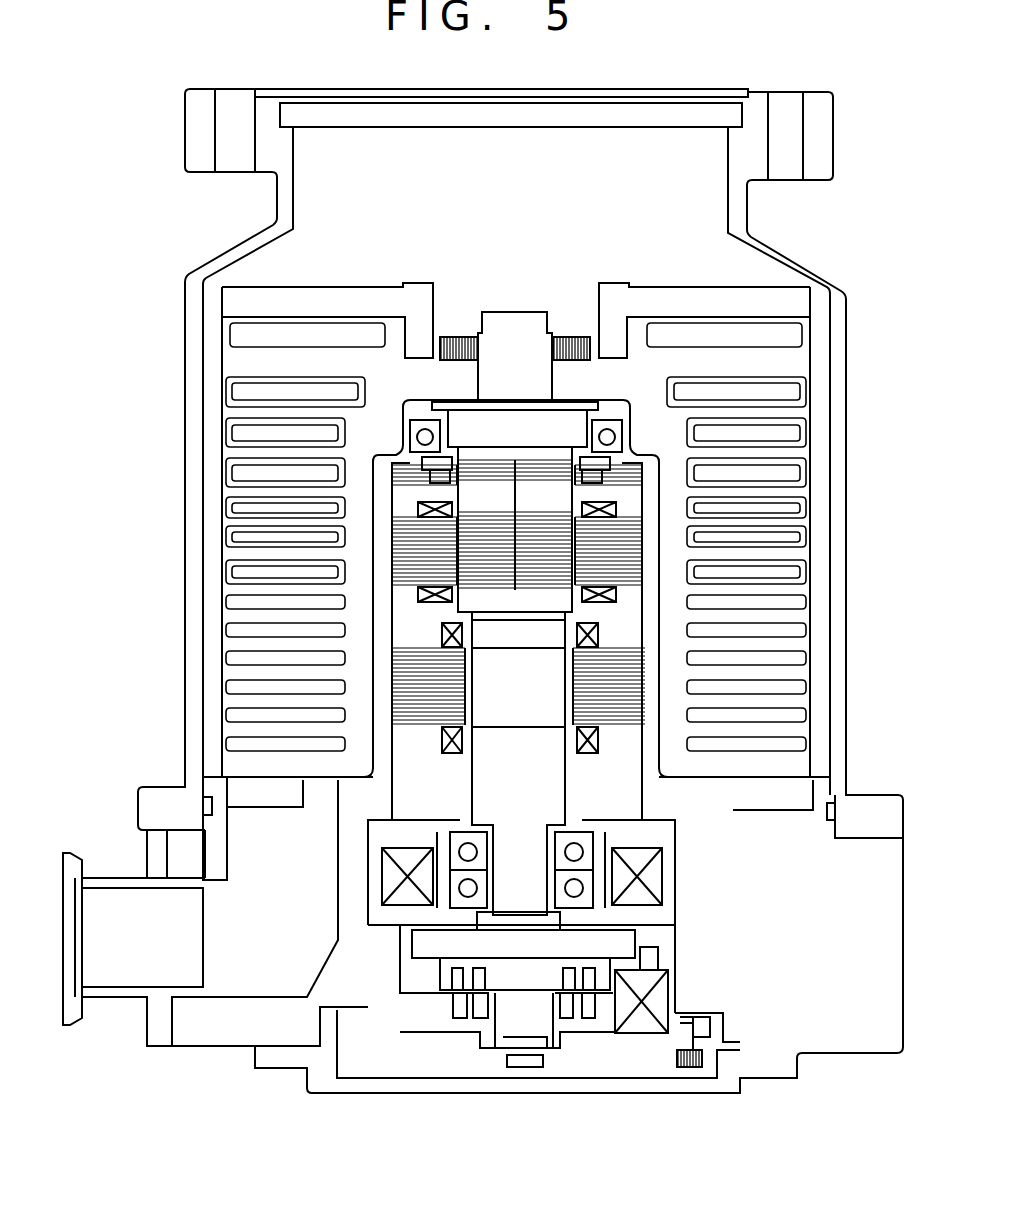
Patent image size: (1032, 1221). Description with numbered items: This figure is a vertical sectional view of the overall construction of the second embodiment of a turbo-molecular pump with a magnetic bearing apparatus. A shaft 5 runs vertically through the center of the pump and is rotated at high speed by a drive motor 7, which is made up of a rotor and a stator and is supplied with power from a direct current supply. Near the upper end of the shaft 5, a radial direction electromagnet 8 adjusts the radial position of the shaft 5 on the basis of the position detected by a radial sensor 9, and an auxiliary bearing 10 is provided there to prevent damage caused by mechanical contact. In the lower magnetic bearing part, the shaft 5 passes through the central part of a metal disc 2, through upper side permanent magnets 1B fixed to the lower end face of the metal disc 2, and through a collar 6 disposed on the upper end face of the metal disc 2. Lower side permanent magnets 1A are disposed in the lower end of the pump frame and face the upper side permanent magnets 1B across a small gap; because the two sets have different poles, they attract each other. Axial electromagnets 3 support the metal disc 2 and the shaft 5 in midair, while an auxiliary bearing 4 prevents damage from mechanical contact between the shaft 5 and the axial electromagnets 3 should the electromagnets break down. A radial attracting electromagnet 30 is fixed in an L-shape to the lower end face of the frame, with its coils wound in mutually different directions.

The lower side permanent magnets 1A is at (482, 1008).
The upper side permanent magnets 1B is at (565, 983).
The metal disc 2 is at (593, 948).
The axial electromagnets 3 is at (593, 840).
The auxiliary bearing 4 is at (635, 837).
The shaft 5 is at (558, 825).
The collar 6 is at (560, 923).
The drive motor 7 is at (608, 687).
The radial direction electromagnet 8 is at (640, 535).
The radial sensor 9 is at (618, 467).
The auxiliary bearing 10 is at (630, 413).
The radial attracting electromagnet 30 is at (648, 983).